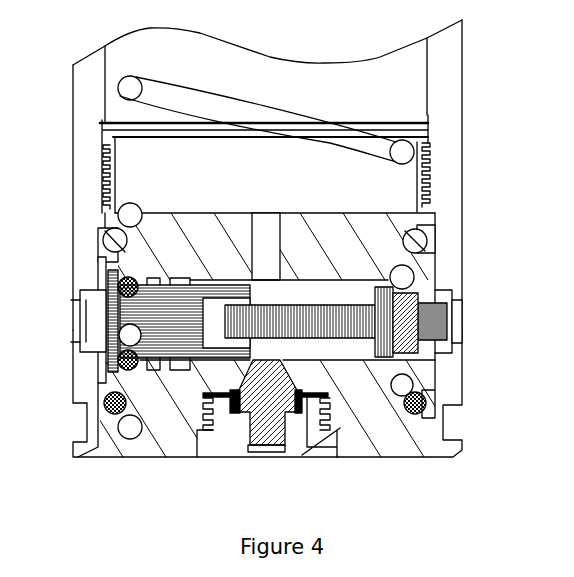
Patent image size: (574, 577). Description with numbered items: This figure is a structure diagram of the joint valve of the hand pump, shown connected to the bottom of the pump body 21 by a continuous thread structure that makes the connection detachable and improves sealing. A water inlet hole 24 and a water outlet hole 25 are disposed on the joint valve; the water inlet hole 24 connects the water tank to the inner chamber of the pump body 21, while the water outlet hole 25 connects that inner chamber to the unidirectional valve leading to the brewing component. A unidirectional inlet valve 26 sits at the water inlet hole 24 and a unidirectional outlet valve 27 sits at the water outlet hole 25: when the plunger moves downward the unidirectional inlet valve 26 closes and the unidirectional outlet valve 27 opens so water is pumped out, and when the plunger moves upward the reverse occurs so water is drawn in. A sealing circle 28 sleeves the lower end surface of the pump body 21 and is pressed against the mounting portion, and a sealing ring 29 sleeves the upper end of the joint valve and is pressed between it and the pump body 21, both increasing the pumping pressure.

The pump body 21 is at (448, 173).
The water inlet hole 24 is at (453, 312).
The water outlet hole 25 is at (273, 458).
The unidirectional inlet valve 26 is at (430, 323).
The unidirectional outlet valve 27 is at (237, 447).
The sealing circle 28 is at (447, 422).
The sealing ring 29 is at (103, 238).